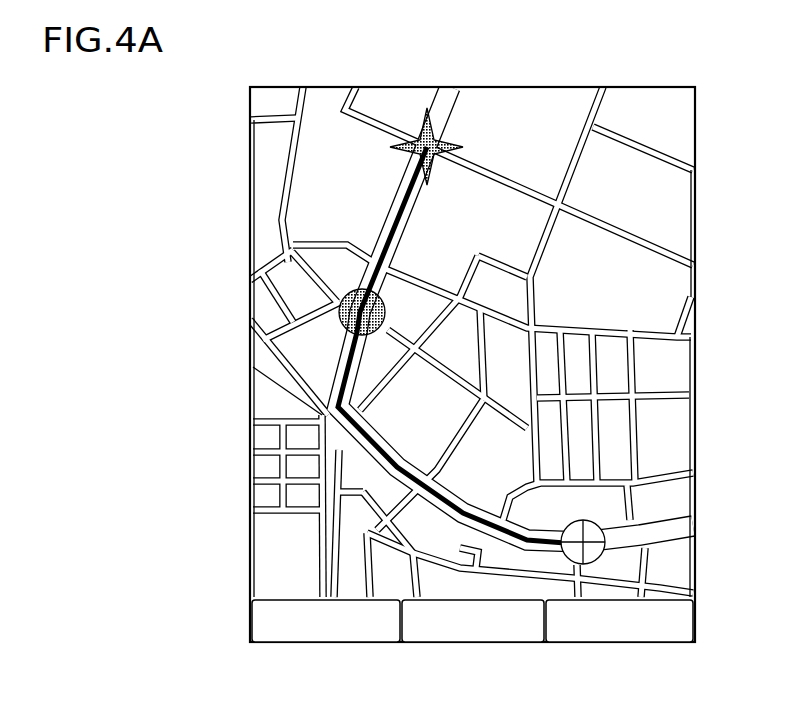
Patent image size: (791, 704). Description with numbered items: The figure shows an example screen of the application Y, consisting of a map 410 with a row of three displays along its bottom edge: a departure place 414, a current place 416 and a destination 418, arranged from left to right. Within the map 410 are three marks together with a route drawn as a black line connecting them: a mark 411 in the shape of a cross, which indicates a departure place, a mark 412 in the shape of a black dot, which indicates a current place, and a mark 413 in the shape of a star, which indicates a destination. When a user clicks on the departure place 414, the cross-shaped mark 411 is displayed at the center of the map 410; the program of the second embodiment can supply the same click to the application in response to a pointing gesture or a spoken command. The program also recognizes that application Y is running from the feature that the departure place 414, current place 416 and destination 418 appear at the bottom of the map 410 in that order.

The map 410 is at (473, 87).
The mark in a shape of a cross 411 is at (605, 542).
The mark in a shape of a black dot 412 is at (340, 313).
The mark in a shape of a star 413 is at (393, 147).
The departure place 414 is at (323, 643).
The current place 416 is at (470, 643).
The destination 418 is at (620, 643).